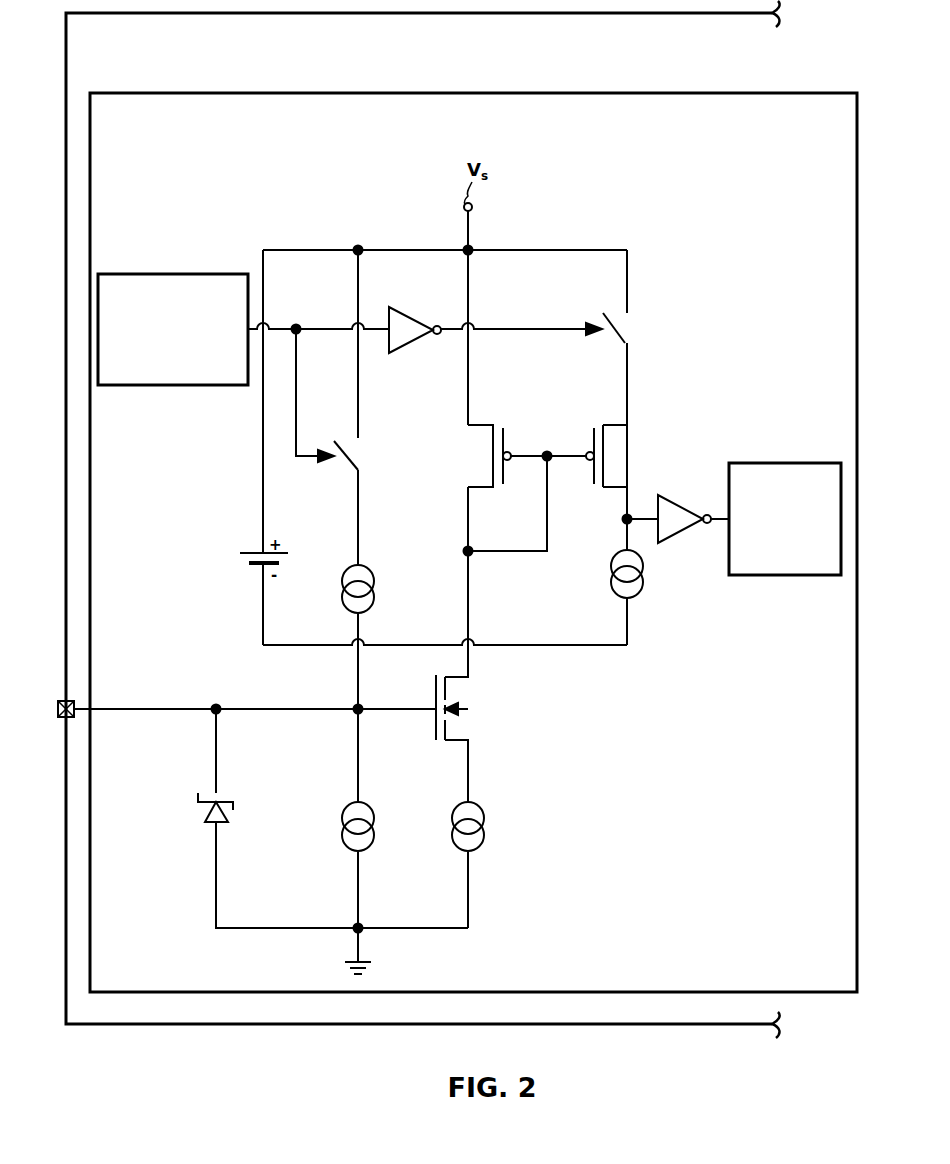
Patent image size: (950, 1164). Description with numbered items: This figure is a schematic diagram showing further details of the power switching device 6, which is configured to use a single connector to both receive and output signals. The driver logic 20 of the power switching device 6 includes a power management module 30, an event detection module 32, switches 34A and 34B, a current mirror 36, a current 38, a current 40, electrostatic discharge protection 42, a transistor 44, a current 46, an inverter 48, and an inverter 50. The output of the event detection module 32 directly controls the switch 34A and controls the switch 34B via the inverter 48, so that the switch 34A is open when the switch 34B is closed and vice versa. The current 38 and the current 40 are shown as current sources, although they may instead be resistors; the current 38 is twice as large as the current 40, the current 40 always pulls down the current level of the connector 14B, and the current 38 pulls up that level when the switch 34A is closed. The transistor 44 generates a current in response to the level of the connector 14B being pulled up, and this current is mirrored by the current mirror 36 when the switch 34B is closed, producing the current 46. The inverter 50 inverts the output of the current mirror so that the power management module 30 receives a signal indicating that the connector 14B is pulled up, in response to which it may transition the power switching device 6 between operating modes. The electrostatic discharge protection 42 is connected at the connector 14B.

The power switching device 6 is at (423, 519).
The driver logic 20 is at (473, 542).
The event detection module 32 is at (173, 329).
The power management module 30 is at (785, 519).
The inverter 48 is at (409, 352).
The switch 34B is at (630, 332).
The switch 34A is at (362, 458).
The current mirror 36 is at (650, 416).
The current 38 is at (371, 567).
The current 46 is at (636, 596).
The inverter 50 is at (677, 536).
The connector 14B is at (58, 700).
The electrostatic discharge protection 42 is at (204, 821).
The transistor 44 is at (431, 690).
The current 40 is at (372, 805).